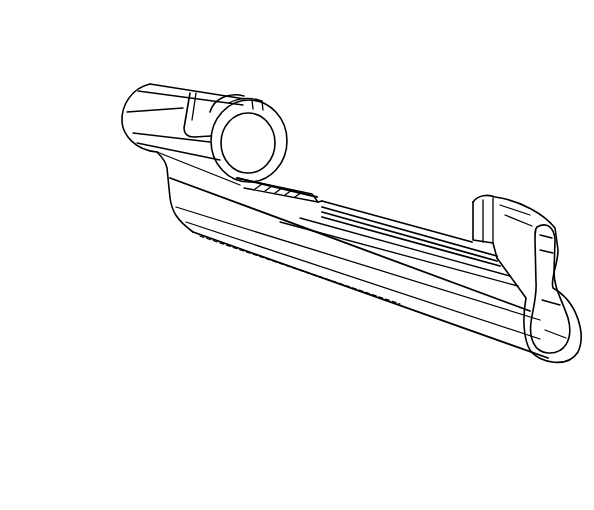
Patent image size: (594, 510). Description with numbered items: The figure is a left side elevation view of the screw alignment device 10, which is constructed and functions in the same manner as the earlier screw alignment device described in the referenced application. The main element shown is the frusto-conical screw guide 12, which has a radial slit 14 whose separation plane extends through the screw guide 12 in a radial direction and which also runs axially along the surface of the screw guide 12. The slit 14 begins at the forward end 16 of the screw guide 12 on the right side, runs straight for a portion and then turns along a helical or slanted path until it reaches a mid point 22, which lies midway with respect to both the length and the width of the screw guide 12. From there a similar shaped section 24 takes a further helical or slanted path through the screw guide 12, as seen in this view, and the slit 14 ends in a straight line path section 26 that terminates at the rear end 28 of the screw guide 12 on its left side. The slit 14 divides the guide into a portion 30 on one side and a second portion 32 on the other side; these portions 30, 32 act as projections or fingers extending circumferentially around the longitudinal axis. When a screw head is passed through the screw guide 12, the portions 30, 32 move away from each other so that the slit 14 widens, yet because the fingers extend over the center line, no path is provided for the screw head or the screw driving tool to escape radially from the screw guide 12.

The screw alignment device 10 is at (433, 150).
The screw guide 12 is at (230, 97).
The slit 14 is at (183, 130).
The forward end 16 is at (137, 100).
The mid point 22 is at (196, 112).
The similar shaped section 24 is at (223, 93).
The straight line path section 26 is at (167, 163).
The rear end 28 is at (276, 152).
The portion 30 is at (163, 83).
The second portion 32 is at (237, 100).